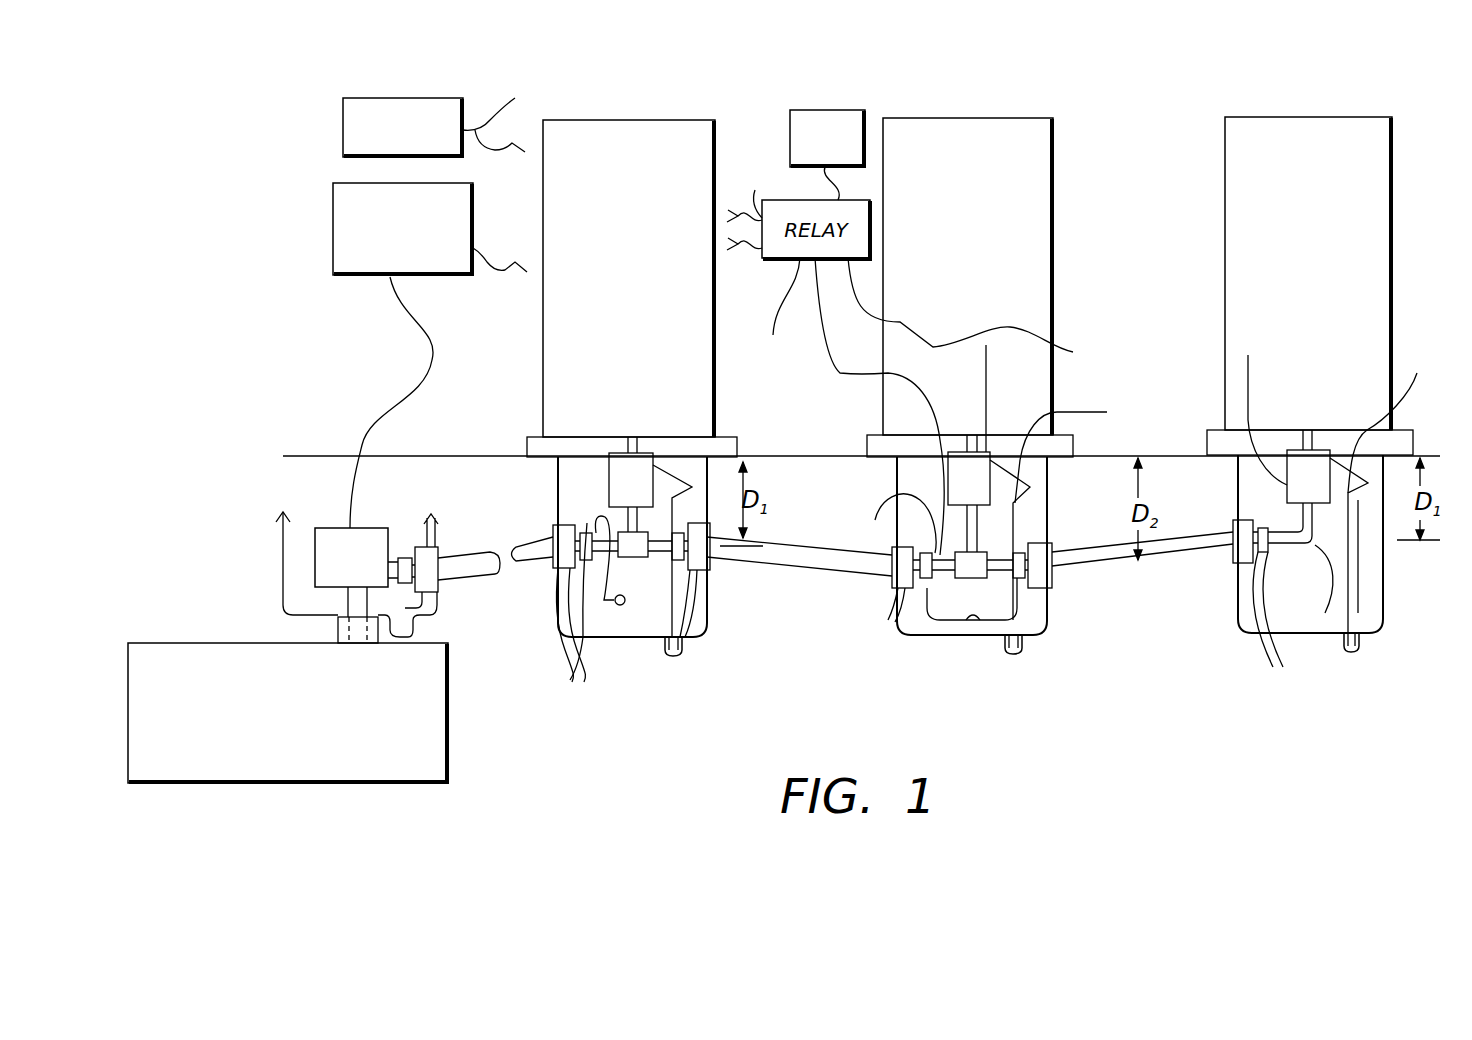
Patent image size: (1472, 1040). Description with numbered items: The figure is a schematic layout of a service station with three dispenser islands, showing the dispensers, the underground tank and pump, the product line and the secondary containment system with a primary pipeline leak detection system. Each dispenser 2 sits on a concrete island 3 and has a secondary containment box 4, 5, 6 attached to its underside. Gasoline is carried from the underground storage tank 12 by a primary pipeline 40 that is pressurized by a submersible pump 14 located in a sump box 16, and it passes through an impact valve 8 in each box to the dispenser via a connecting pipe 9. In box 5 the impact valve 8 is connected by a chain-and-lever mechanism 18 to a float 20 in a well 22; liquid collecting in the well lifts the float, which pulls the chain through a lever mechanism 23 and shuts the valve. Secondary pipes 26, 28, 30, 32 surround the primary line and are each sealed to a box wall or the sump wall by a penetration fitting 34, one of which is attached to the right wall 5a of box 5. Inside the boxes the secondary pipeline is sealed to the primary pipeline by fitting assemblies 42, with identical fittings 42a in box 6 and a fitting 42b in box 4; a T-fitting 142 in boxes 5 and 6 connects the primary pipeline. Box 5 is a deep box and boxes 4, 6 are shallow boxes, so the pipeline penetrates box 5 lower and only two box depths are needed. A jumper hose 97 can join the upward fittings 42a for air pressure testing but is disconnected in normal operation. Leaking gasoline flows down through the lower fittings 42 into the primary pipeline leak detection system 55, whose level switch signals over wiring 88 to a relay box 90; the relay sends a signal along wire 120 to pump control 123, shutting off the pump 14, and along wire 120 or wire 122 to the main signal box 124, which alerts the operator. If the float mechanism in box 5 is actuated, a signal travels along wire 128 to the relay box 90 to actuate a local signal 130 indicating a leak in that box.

The dispenser 2 is at (655, 120).
The island 3 is at (725, 436).
The secondary containment box 4 is at (1236, 634).
The secondary containment box 5 is at (884, 460).
The right wall 5a is at (1053, 545).
The secondary containment box 6 is at (548, 480).
The impact valve 8 is at (600, 453).
The connecting pipe 9 is at (655, 444).
The underground storage tank 12 is at (448, 733).
The submersible pump 14 is at (377, 528).
The sump box 16 is at (272, 557).
The chain-and-lever mechanism 18 is at (1428, 617).
The float 20 is at (684, 650).
The well 22 is at (675, 658).
The lever mechanism 23 is at (1040, 520).
The secondary pipe 26 is at (1160, 568).
The secondary pipe 28 is at (843, 577).
The secondary pipe 30 is at (553, 538).
The secondary pipe 32 is at (477, 573).
The penetration fitting 34 is at (417, 548).
The primary pipeline 40 is at (1040, 560).
The fitting assembly 42 is at (437, 612).
The fitting 42a is at (575, 683).
The fitting 42b is at (1279, 626).
The primary pipeline leak detection system 55 is at (975, 620).
The wiring 88 is at (837, 377).
The relay box 90 is at (779, 312).
The jumper hose 97 is at (586, 640).
The wire 120 is at (488, 272).
The wire 122 is at (623, 144).
The pump control 123 is at (333, 248).
The main signal box 124 is at (366, 98).
The wire 128 is at (977, 323).
The local signal 130 is at (833, 110).
The T-fitting 142 is at (624, 605).